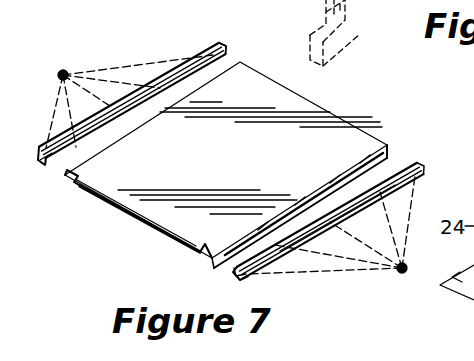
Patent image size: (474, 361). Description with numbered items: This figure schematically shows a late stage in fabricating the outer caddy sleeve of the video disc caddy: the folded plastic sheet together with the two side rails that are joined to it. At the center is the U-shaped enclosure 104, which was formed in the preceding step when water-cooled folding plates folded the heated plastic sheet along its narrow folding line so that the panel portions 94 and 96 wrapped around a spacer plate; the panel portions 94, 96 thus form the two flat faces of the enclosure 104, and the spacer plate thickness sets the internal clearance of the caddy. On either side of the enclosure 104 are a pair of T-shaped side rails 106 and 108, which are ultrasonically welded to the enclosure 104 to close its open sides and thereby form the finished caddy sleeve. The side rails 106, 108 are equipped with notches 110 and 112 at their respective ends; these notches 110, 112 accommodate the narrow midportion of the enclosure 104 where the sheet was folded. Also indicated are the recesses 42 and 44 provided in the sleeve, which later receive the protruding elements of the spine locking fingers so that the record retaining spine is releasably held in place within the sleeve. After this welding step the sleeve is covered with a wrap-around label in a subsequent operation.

The U-shaped enclosure 104 is at (320, 113).
The panel portion 94 is at (123, 200).
The panel portion 96 is at (172, 248).
The T-shaped side rail 106 is at (211, 46).
The notch 110 is at (224, 57).
The recess 44 is at (66, 136).
The notch 112 is at (415, 164).
The T-shaped side rail 108 is at (272, 263).
The recess 42 is at (233, 265).